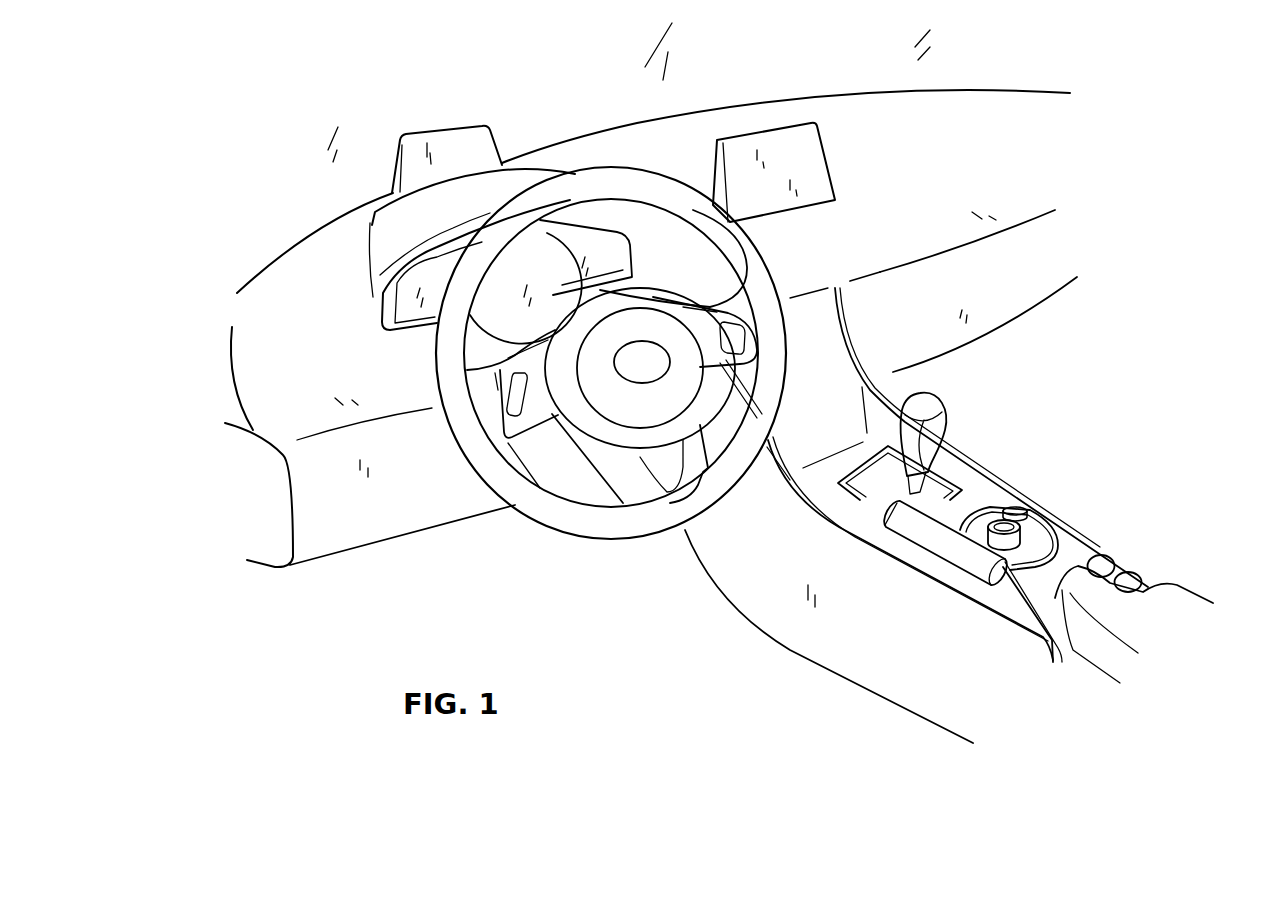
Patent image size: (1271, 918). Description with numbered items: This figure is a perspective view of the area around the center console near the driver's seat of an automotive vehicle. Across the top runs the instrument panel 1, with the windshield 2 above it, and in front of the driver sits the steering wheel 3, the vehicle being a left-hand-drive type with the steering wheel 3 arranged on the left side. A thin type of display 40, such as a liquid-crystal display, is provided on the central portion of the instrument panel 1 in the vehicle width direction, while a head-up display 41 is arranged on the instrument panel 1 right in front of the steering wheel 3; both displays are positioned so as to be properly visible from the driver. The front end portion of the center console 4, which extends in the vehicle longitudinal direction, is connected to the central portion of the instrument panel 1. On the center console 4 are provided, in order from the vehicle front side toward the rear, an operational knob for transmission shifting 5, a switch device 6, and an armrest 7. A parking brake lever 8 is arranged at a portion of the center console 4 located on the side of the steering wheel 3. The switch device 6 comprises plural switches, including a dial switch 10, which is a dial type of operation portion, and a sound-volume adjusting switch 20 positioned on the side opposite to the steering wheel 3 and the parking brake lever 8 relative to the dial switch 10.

The instrument panel 1 is at (973, 103).
The windshield 2 is at (745, 73).
The steering wheel 3 is at (560, 517).
The center console 4 is at (910, 670).
The operational knob for transmission shifting 5 is at (932, 400).
The switch device 6 is at (1050, 522).
The armrest 7 is at (1183, 603).
The parking brake lever 8 is at (933, 540).
The dial switch 10 is at (1043, 537).
The sound-volume adjusting switch 20 is at (1015, 508).
The display 40 is at (817, 153).
The head-up display 41 is at (461, 137).